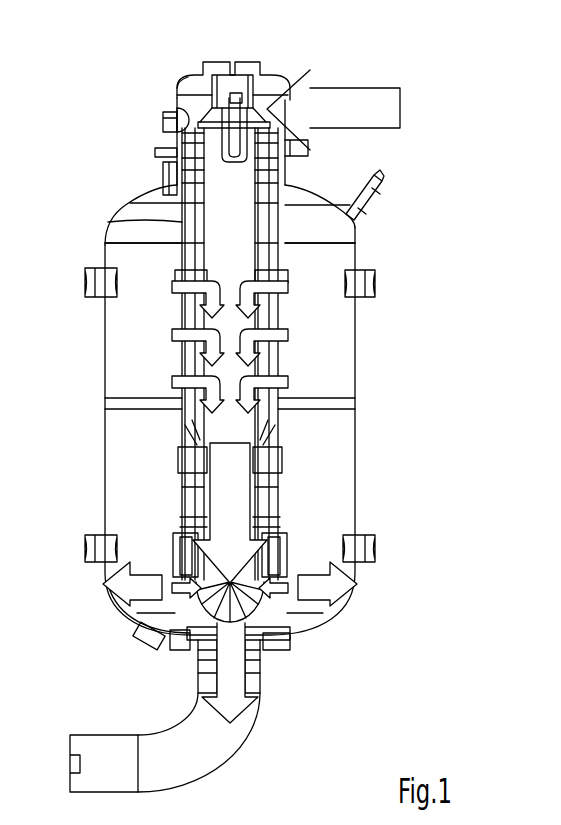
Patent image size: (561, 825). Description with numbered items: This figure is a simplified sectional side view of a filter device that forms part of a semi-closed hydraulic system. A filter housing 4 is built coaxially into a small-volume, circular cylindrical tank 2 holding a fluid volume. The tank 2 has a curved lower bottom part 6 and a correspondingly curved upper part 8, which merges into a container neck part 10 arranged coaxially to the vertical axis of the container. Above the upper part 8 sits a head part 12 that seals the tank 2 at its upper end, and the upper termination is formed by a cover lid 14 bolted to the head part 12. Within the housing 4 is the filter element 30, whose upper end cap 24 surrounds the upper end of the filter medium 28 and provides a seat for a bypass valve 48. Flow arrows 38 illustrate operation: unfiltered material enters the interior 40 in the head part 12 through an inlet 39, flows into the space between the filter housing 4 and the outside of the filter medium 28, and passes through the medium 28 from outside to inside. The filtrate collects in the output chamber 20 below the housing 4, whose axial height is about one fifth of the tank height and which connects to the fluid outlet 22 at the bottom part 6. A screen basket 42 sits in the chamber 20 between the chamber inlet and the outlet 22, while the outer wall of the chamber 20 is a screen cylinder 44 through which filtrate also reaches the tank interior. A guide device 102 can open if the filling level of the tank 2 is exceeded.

The tank 2 is at (280, 409).
The filter housing 4 is at (285, 250).
The bottom part 6 is at (313, 627).
The upper part 8 is at (143, 190).
The container neck part 10 is at (160, 152).
The head part 12 is at (170, 100).
The cover lid 14 is at (195, 78).
The output chamber 20 is at (280, 522).
The fluid outlet 22 is at (207, 640).
The upper end cap 24 is at (337, 127).
The filter medium 28 is at (110, 222).
The filter element 30 is at (357, 397).
The flow arrows 38 is at (337, 100).
The inlet 39 is at (302, 152).
The interior 40 is at (173, 88).
The screen basket 42 is at (260, 647).
The screen cylinder 44 is at (130, 612).
The bypass valve 48 is at (272, 110).
The guide device 102 is at (352, 220).